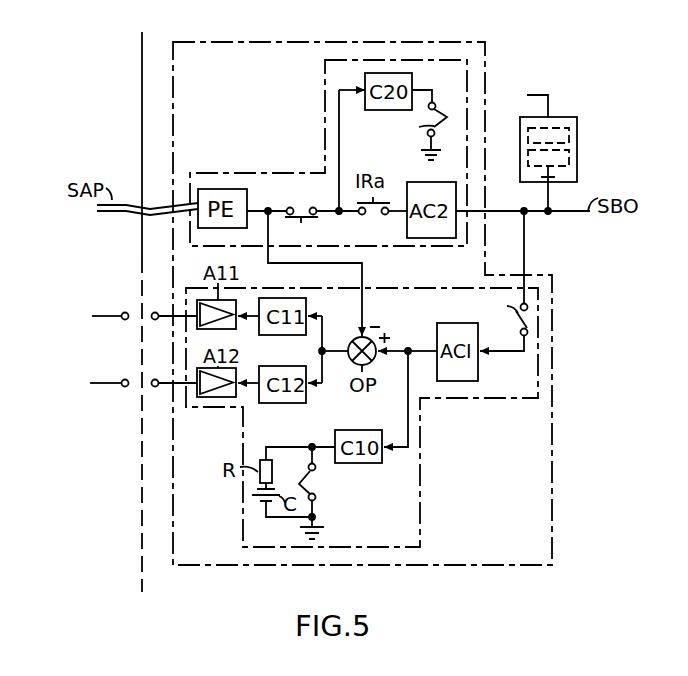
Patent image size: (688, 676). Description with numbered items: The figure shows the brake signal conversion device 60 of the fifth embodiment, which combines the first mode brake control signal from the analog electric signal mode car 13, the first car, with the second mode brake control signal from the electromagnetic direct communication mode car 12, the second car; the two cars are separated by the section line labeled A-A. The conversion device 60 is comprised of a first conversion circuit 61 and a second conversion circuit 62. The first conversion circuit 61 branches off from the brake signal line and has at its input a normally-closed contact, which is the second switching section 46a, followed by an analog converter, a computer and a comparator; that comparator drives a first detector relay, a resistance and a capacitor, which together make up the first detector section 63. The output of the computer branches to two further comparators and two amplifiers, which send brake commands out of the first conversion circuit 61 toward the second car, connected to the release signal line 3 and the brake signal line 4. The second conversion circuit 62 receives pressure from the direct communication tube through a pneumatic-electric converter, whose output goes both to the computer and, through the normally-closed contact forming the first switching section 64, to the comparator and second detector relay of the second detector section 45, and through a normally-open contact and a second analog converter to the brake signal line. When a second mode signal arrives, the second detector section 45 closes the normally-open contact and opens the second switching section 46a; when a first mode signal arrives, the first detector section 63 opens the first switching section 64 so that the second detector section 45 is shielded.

The release signal line 3 is at (100, 314).
The brake signal line 4 is at (100, 381).
The electromagnetic direct communication mode car 12 is at (139, 581).
The analog electric signal mode car 13 is at (145, 581).
The second detector section 45 is at (446, 103).
The second switching section 46a is at (530, 320).
The brake signal conversion device 60 is at (284, 41).
The first conversion circuit 61 is at (404, 551).
The second conversion circuit 62 is at (363, 57).
The first detector section 63 is at (318, 493).
The first switching section 64 is at (302, 203).